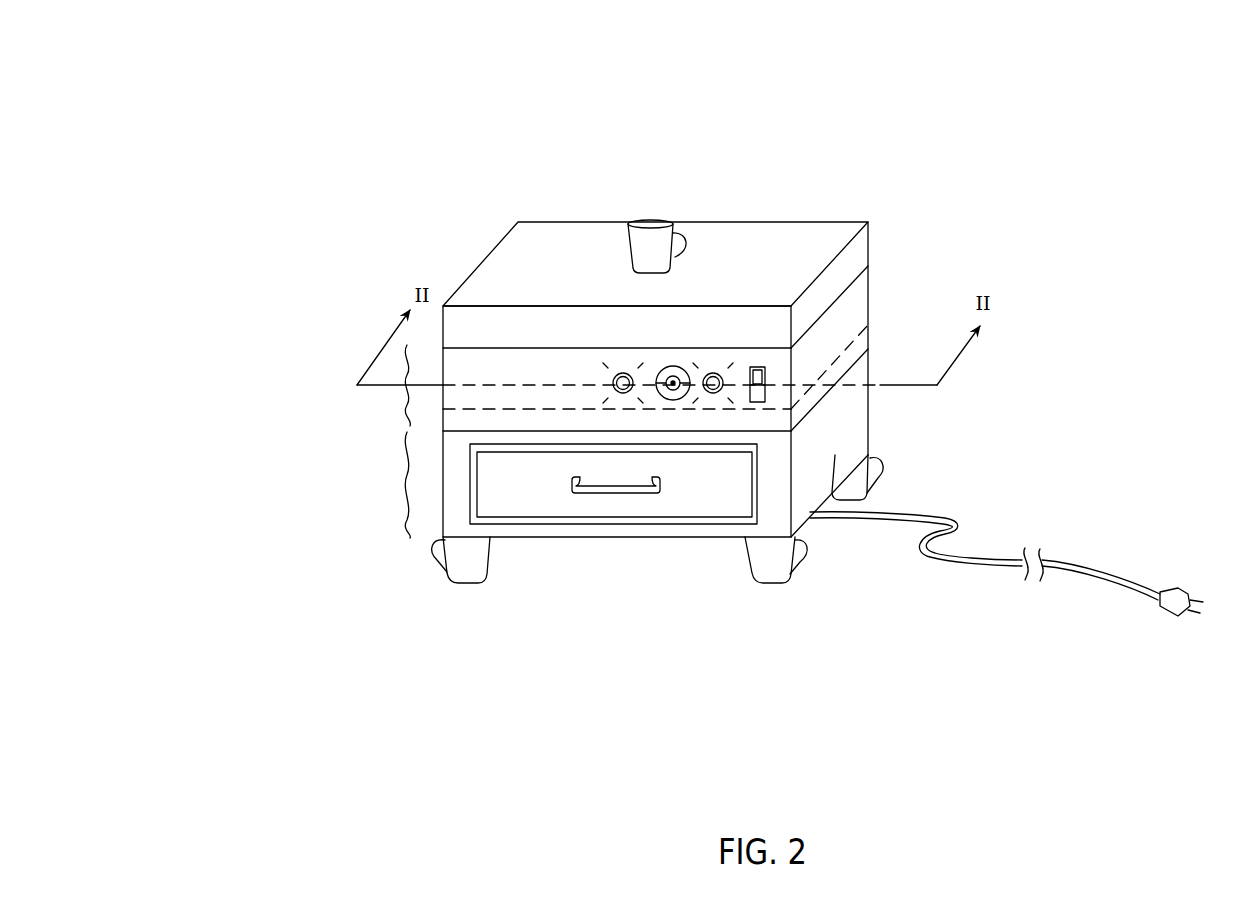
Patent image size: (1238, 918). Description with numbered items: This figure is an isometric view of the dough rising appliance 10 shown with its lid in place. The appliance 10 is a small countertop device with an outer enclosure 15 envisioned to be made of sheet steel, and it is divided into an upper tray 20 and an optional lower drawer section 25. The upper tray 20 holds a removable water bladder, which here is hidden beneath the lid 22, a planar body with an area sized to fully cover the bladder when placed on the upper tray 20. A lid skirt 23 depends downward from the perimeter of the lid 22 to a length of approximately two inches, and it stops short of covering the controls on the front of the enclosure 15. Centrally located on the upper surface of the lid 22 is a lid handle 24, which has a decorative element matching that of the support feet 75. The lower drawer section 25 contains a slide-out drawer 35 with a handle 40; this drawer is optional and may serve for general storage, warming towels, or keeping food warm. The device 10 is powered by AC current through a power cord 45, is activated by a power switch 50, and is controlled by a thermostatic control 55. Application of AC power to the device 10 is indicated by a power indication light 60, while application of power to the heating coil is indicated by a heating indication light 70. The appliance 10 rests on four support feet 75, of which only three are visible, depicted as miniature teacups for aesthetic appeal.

The dough rising appliance 10 is at (408, 755).
The outer enclosure 15 is at (876, 376).
The upper tray 20 is at (357, 387).
The lid 22 is at (514, 221).
The lid skirt 23 is at (477, 323).
The lid handle 24 is at (630, 221).
The lower drawer section 25 is at (402, 483).
The slide-out drawer 35 is at (527, 490).
The handle 40 is at (620, 495).
The power cord 45 is at (960, 530).
The power switch 50 is at (762, 373).
The thermostatic control 55 is at (674, 366).
The power indication light 60 is at (716, 369).
The heating indication light 70 is at (627, 370).
The support feet 75 is at (887, 462).